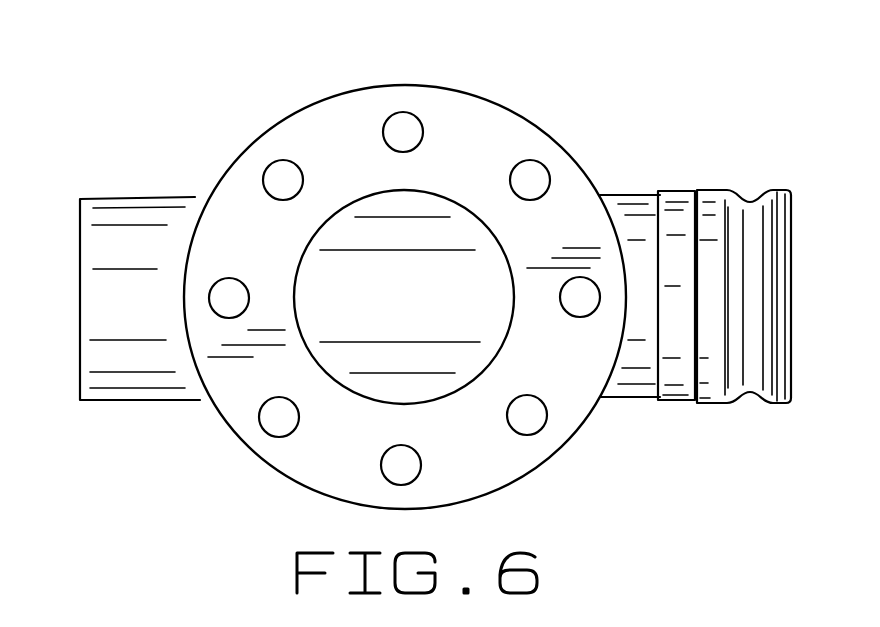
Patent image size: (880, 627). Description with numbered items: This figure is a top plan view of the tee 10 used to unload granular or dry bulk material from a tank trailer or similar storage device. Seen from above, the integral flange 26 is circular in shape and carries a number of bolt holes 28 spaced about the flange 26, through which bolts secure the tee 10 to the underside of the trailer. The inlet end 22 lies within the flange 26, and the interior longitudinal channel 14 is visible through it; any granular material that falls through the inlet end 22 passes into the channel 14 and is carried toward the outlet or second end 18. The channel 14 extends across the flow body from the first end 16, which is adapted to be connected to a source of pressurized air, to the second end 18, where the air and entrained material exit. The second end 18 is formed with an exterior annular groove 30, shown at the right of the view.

The tee 10 is at (600, 148).
The interior longitudinal channel 14 is at (348, 275).
The first end 16 is at (80, 305).
The second end 18 is at (791, 297).
The inlet end 22 is at (435, 243).
The flange 26 is at (462, 120).
The bolt holes 28 is at (400, 125).
The exterior annular groove 30 is at (749, 198).